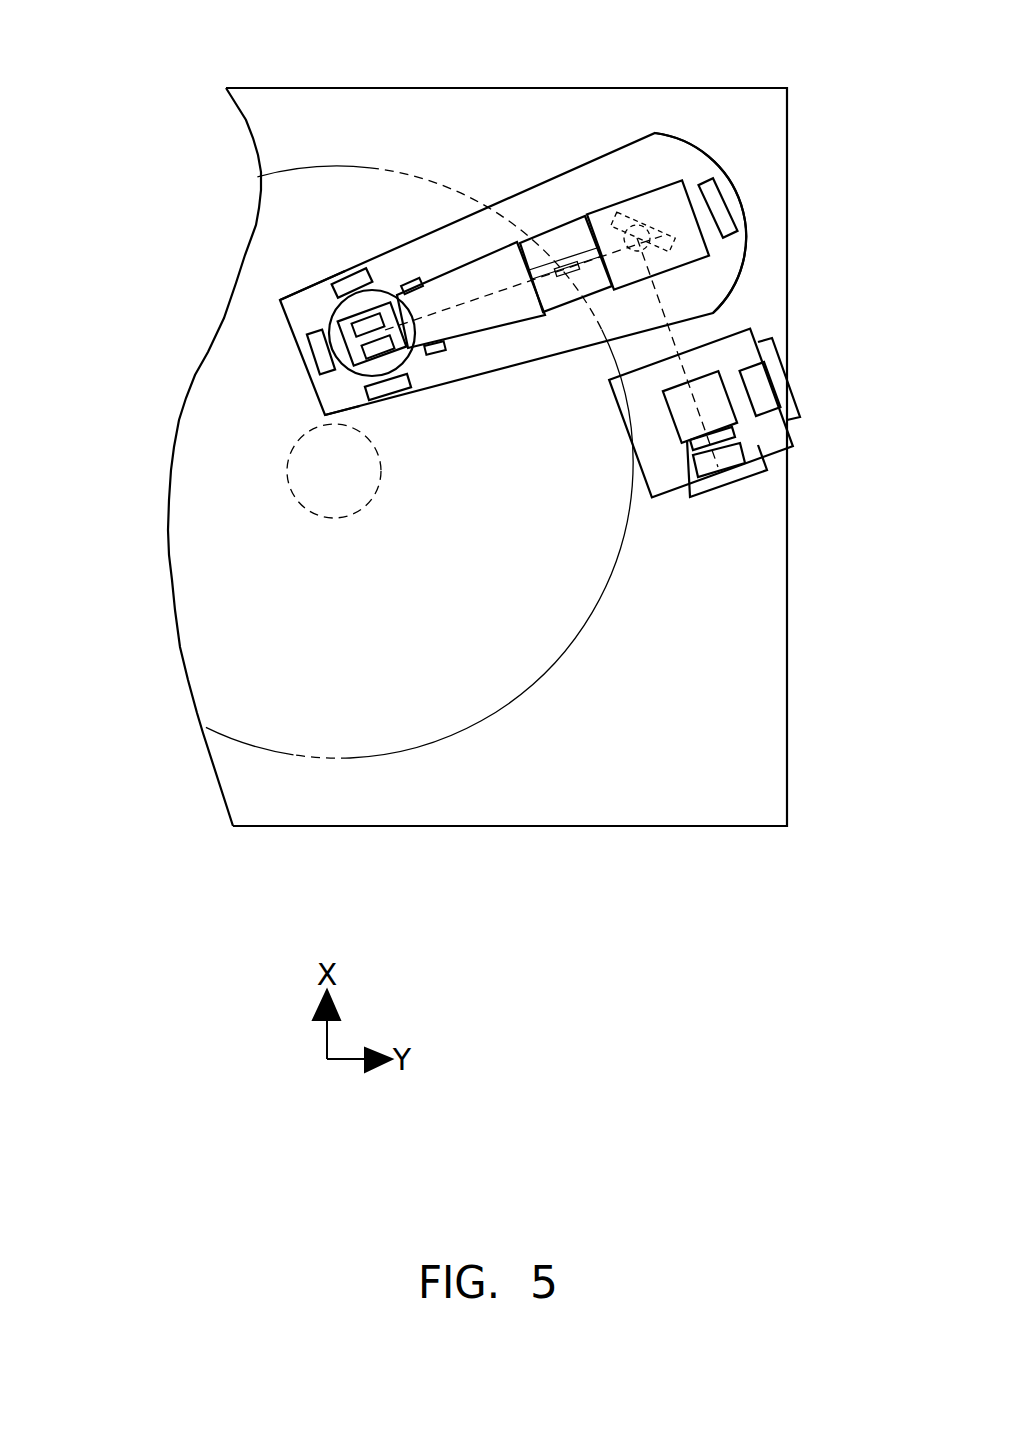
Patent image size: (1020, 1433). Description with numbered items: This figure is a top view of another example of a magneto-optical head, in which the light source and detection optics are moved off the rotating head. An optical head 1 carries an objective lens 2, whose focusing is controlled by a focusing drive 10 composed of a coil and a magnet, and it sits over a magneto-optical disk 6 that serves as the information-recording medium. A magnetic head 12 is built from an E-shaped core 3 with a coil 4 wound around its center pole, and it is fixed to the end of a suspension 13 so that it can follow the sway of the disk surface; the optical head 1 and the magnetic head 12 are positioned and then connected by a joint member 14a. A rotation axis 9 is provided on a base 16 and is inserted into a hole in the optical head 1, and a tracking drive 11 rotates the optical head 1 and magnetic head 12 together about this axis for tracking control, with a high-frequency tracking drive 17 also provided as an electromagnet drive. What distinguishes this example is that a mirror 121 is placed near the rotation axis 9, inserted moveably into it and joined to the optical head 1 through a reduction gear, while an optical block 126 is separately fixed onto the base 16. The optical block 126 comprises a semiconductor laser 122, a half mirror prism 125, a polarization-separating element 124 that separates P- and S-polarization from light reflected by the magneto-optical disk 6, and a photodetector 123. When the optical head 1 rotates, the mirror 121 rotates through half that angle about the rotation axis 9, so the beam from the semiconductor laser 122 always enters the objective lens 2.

The optical head 1 is at (365, 395).
The objective lens 2 is at (280, 303).
The core 3 is at (357, 276).
The coil 4 is at (338, 368).
The magneto-optical disk 6 is at (350, 760).
The rotation axis 9 is at (678, 266).
The focusing drive 10 is at (307, 338).
The tracking drive 11 is at (738, 207).
The magnetic head 12 is at (465, 278).
The suspension 13 is at (540, 278).
The joint member 14a is at (663, 208).
The base 16 is at (260, 800).
The high-frequency tracking drive 17 is at (332, 275).
The mirror 121 is at (637, 238).
The semiconductor laser 122 is at (747, 378).
The photodetector 123 is at (730, 462).
The polarization-separating element 124 is at (737, 442).
The half mirror prism 125 is at (723, 420).
The optical block 126 is at (705, 362).